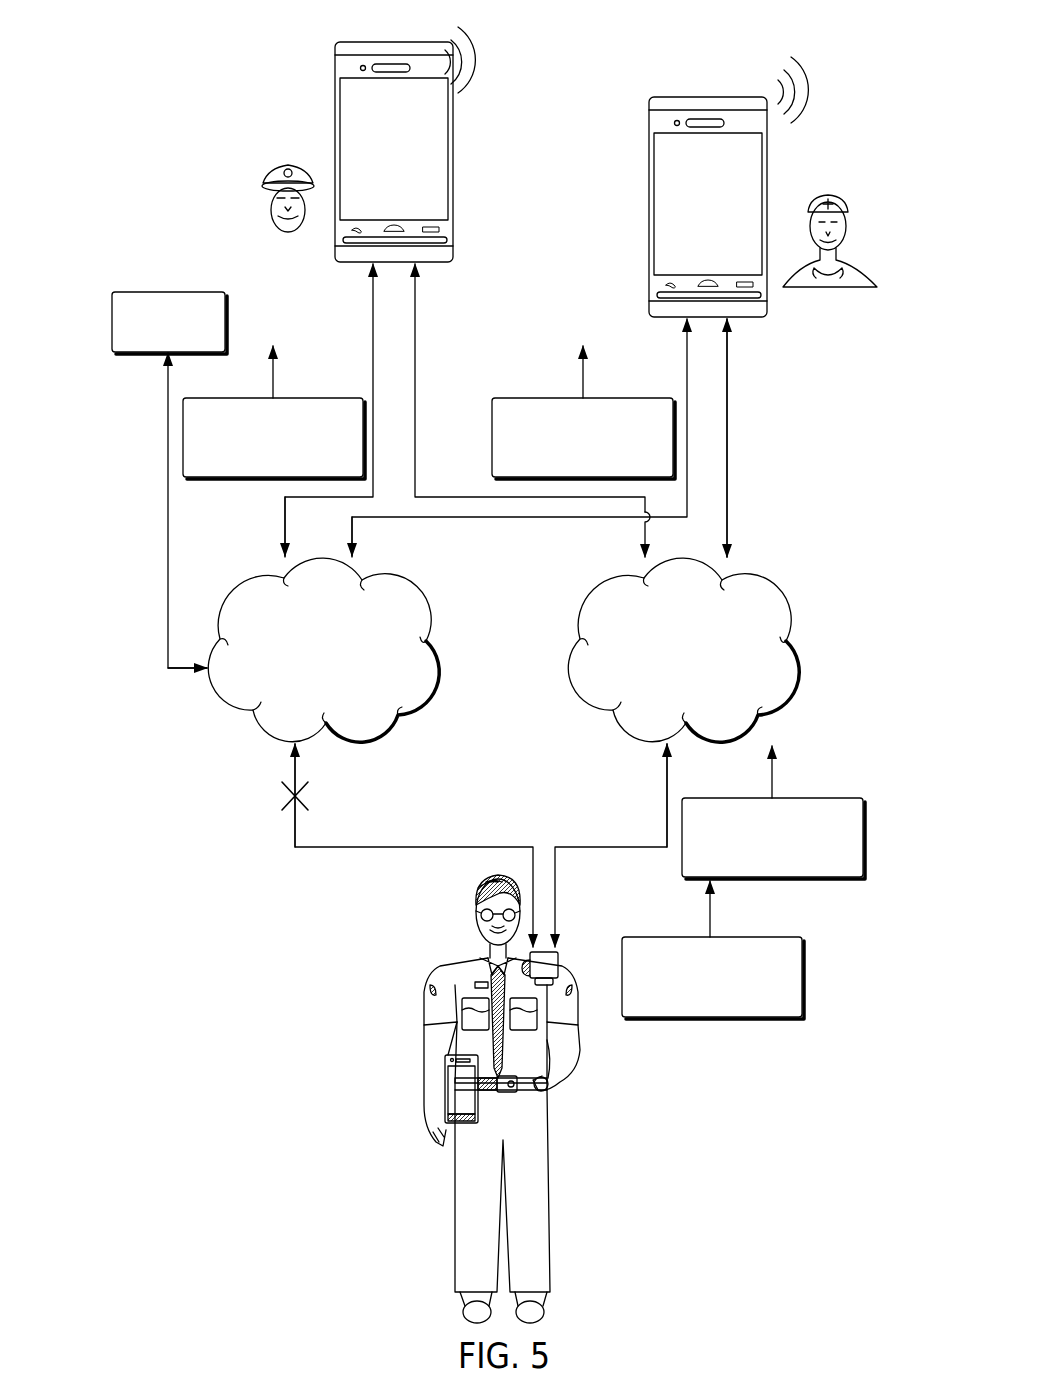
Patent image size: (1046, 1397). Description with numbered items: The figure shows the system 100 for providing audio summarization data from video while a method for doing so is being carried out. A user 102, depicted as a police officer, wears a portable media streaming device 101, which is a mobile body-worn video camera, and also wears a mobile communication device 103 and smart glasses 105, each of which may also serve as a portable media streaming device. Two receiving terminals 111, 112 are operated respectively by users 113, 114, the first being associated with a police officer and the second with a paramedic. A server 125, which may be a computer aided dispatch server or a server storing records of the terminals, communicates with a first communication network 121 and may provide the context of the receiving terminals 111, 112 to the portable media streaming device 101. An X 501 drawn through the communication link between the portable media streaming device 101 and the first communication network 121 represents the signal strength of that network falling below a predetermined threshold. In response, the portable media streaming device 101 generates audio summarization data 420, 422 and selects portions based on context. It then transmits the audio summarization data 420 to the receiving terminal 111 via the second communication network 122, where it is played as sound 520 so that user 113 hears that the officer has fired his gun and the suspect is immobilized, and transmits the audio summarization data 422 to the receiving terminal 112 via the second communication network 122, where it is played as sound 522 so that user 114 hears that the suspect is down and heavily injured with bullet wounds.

The system 100 is at (198, 80).
The portable media streaming device 101 is at (560, 954).
The user 102 is at (463, 1312).
The mobile communication device 103 is at (445, 1090).
The smart glasses 105 is at (478, 915).
The receiving terminal 111 is at (333, 110).
The receiving terminal 112 is at (648, 205).
The user 113 is at (268, 212).
The user 114 is at (850, 210).
The first communication network 121 is at (245, 577).
The second communication network 122 is at (594, 582).
The server 125 is at (112, 322).
The audio summarization data 420 is at (318, 398).
The audio summarization data 422 is at (492, 437).
The X 501 is at (290, 804).
The sound 520 is at (622, 72).
The sound 522 is at (838, 40).